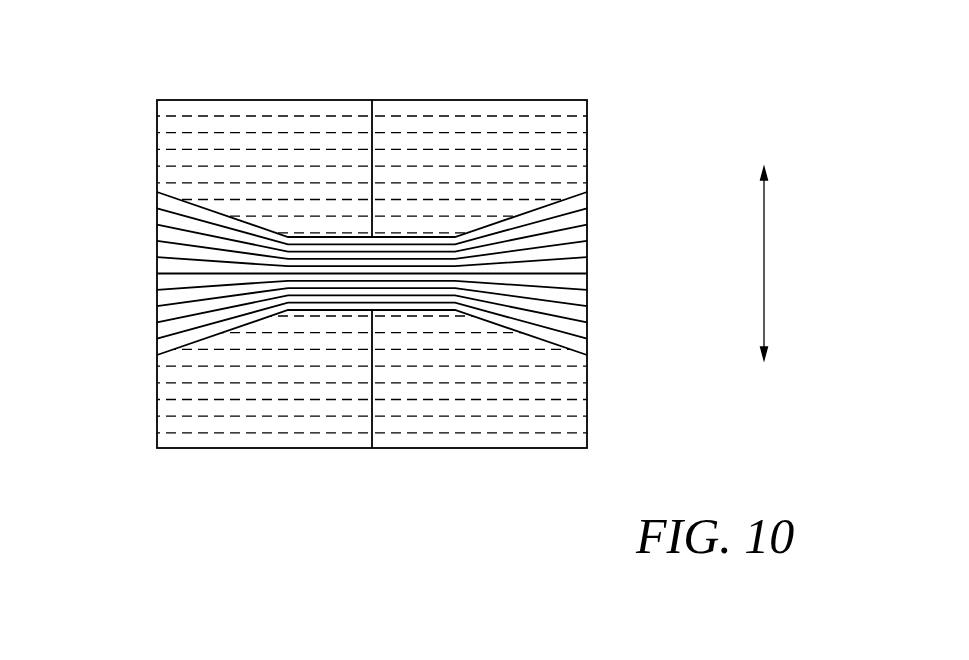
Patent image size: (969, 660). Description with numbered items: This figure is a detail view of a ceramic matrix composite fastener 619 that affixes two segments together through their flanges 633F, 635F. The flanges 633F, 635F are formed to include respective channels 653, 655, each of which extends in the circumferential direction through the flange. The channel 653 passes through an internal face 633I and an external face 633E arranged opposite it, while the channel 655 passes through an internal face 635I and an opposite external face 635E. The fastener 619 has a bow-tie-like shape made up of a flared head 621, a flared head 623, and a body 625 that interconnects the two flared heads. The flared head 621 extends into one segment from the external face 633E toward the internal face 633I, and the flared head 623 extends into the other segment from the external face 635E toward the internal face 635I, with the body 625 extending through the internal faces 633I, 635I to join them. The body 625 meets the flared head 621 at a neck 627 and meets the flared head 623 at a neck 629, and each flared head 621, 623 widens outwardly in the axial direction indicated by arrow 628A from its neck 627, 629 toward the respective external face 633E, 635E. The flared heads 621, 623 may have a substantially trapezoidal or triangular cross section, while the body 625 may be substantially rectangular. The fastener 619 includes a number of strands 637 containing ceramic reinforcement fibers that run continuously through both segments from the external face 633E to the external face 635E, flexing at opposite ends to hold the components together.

The fastener 619 is at (623, 171).
The flared head 621 is at (537, 356).
The flared head 623 is at (202, 354).
The body 625 is at (338, 327).
The neck 627 is at (438, 326).
The arrow indicating axial direction 628A is at (766, 274).
The neck 629 is at (290, 224).
The external face 633E is at (587, 264).
The flange 633F is at (538, 131).
The internal face 633I is at (373, 175).
The external face 635E is at (157, 263).
The flange 635F is at (217, 131).
The internal face 635I is at (371, 146).
The strands 637 is at (572, 240).
The channel 653 is at (536, 196).
The channel 655 is at (187, 189).